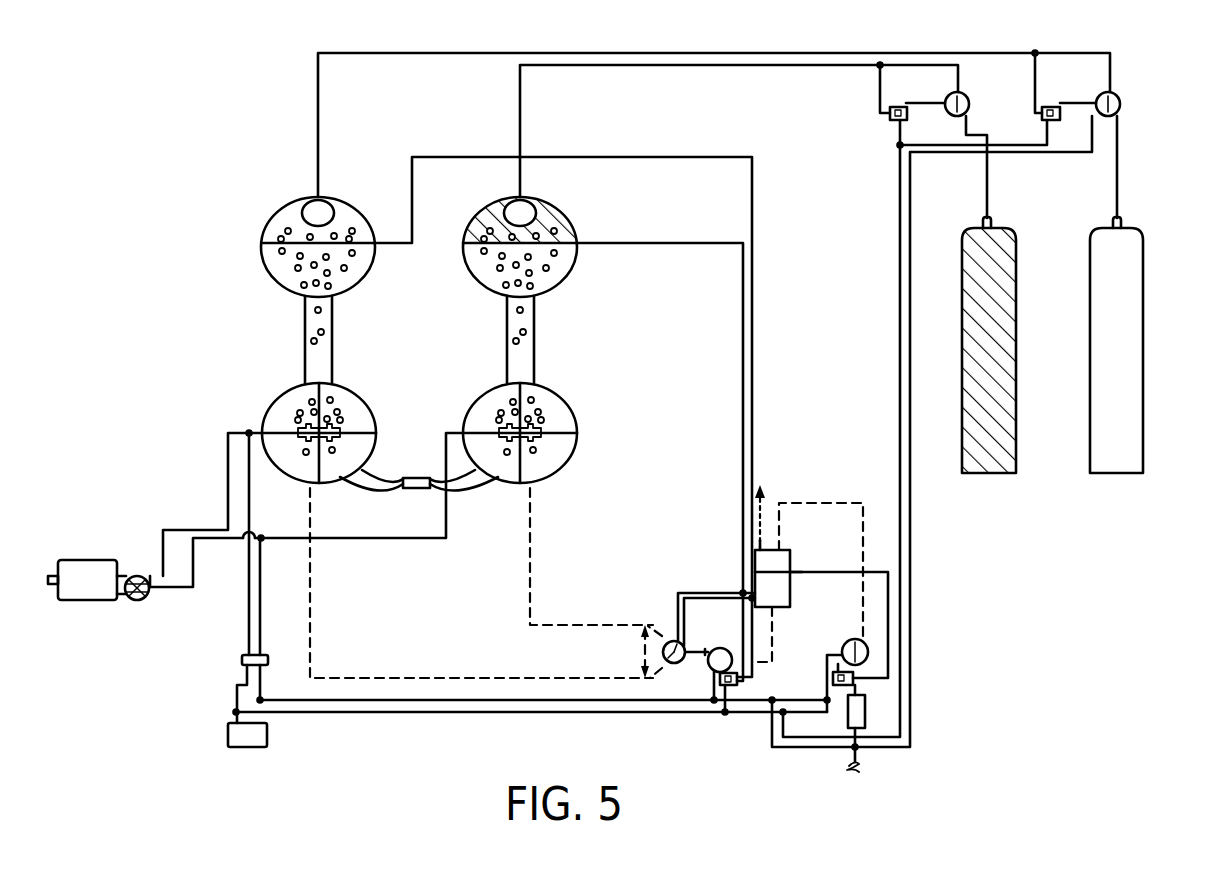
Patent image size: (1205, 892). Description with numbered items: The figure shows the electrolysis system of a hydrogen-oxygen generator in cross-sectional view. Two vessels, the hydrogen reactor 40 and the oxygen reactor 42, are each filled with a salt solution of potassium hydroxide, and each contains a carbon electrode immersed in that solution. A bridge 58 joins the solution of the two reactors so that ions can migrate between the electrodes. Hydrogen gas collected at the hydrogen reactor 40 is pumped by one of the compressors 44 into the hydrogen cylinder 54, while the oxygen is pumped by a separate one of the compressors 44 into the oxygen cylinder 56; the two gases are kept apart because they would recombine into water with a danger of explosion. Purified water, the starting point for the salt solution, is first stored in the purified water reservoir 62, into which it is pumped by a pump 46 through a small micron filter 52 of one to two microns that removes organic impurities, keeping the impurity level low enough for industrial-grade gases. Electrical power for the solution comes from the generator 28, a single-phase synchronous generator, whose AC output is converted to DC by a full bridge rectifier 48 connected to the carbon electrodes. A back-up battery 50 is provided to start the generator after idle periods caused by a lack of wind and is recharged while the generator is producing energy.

The generator 28 is at (100, 559).
The hydrogen reactor 40 is at (298, 199).
The oxygen reactor 42 is at (560, 212).
The pressure regulators 44 is at (1099, 82).
The pressure gauge 46 is at (676, 640).
The full bridge rectifier 48 is at (147, 570).
The back-up battery 50 is at (268, 736).
The micron filter 52 is at (866, 717).
The hydrogen cylinder 54 is at (1132, 450).
The oxygen cylinder 56 is at (1007, 450).
The bridge 58 is at (390, 488).
The purified water reservoir 62 is at (790, 593).